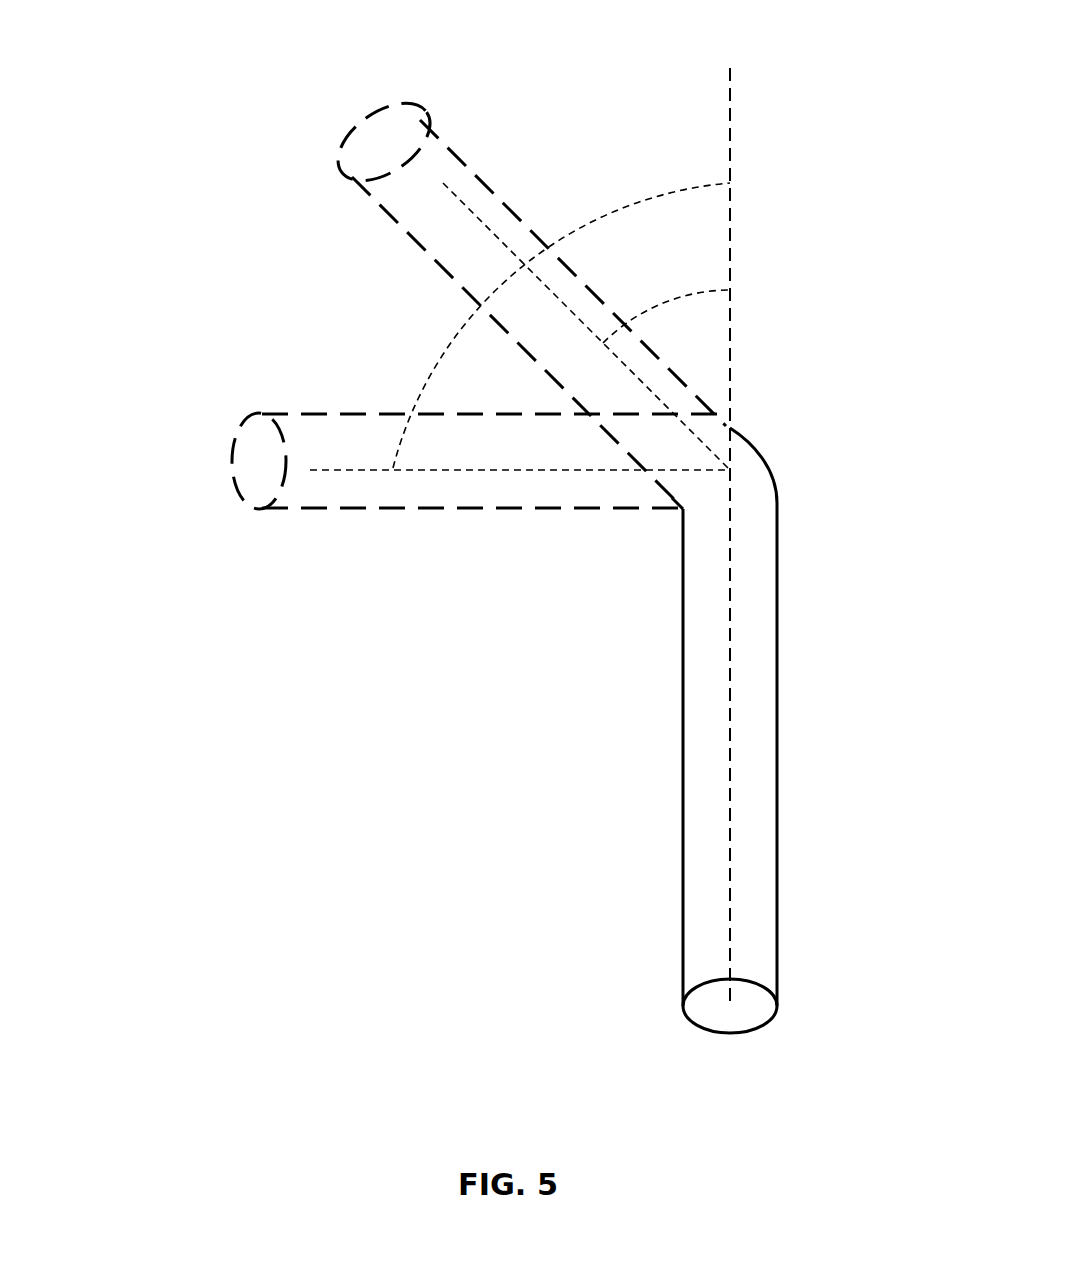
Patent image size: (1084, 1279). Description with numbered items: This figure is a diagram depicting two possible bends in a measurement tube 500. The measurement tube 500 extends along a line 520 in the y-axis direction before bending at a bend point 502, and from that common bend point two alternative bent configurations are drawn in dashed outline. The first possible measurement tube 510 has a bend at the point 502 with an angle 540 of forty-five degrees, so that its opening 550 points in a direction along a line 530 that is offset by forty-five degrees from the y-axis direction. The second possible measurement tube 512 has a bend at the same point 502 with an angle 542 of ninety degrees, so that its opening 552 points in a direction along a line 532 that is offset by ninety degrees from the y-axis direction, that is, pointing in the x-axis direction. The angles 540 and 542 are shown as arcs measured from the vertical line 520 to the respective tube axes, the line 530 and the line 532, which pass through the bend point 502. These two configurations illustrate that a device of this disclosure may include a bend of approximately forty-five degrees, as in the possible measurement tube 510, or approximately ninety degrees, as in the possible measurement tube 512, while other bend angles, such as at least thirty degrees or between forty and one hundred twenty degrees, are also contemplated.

The measurement tube 500 is at (802, 730).
The bend point 502 is at (763, 465).
The possible measurement tube 510 is at (454, 265).
The possible measurement tube 512 is at (398, 514).
The line 520 is at (731, 250).
The line 530 is at (453, 202).
The line 532 is at (363, 470).
The angle 540 is at (700, 293).
The angle 542 is at (677, 188).
The opening 550 is at (270, 65).
The opening 552 is at (152, 414).